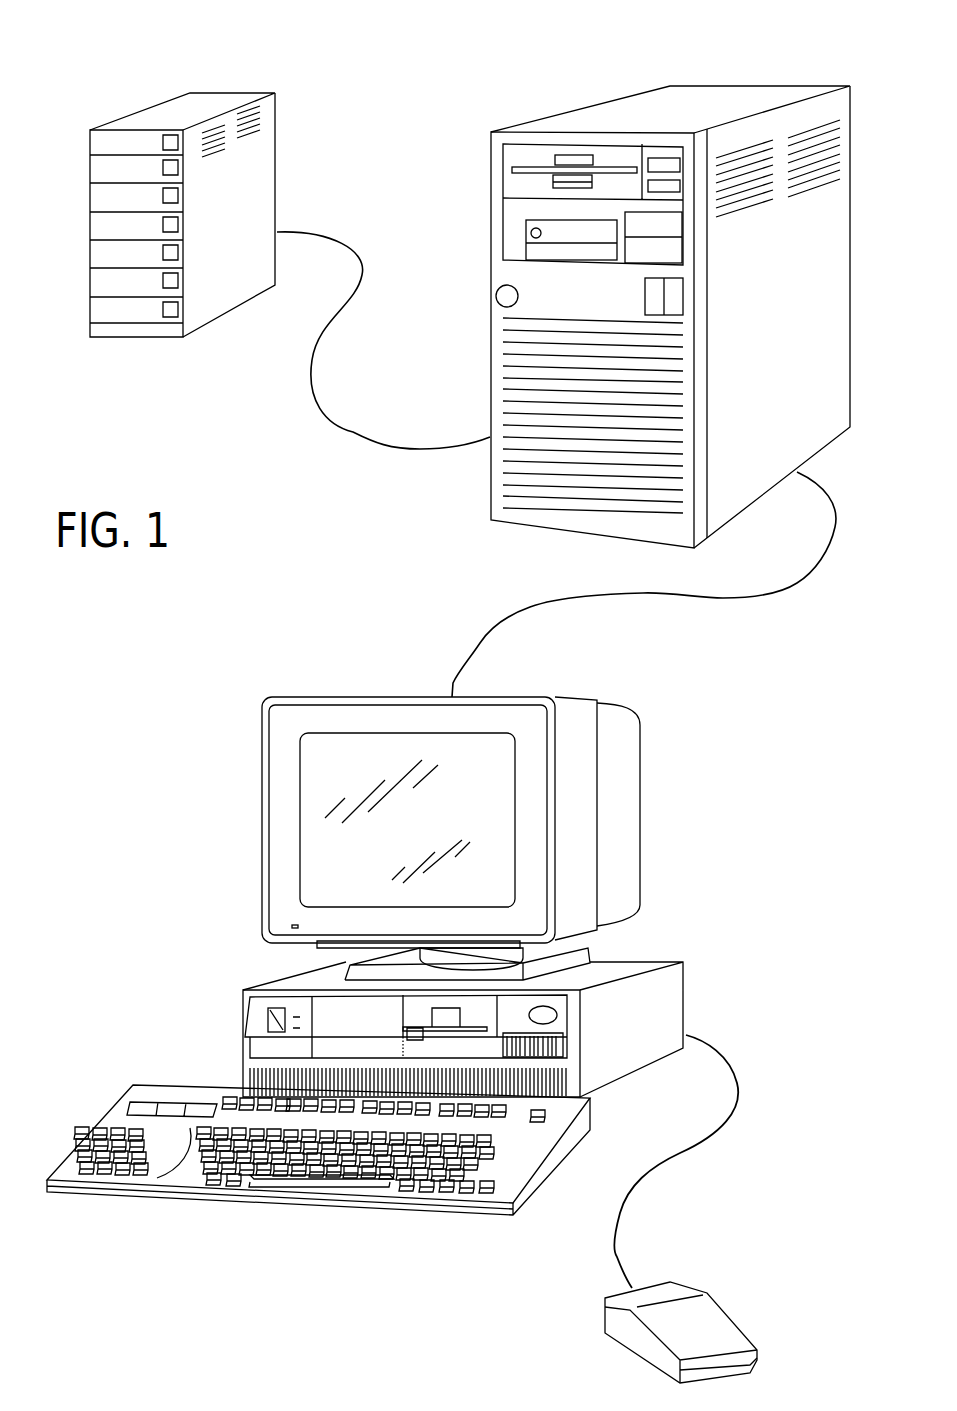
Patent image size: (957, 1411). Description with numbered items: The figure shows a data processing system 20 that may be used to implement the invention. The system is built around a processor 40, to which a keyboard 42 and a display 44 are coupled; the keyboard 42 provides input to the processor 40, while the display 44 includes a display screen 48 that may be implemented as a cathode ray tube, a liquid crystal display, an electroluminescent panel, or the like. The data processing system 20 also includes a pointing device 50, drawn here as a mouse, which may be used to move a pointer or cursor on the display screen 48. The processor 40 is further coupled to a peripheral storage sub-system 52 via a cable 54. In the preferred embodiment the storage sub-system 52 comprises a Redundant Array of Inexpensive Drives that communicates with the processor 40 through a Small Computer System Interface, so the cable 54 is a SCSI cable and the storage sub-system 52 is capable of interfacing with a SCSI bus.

The data processing system 20 is at (560, 97).
The processor 40 is at (490, 312).
The keyboard 42 is at (443, 1213).
The display 44 is at (643, 754).
The display screen 48 is at (320, 838).
The pointing device 50 is at (728, 1313).
The peripheral storage sub-system 52 is at (275, 147).
The cable 54 is at (313, 383).